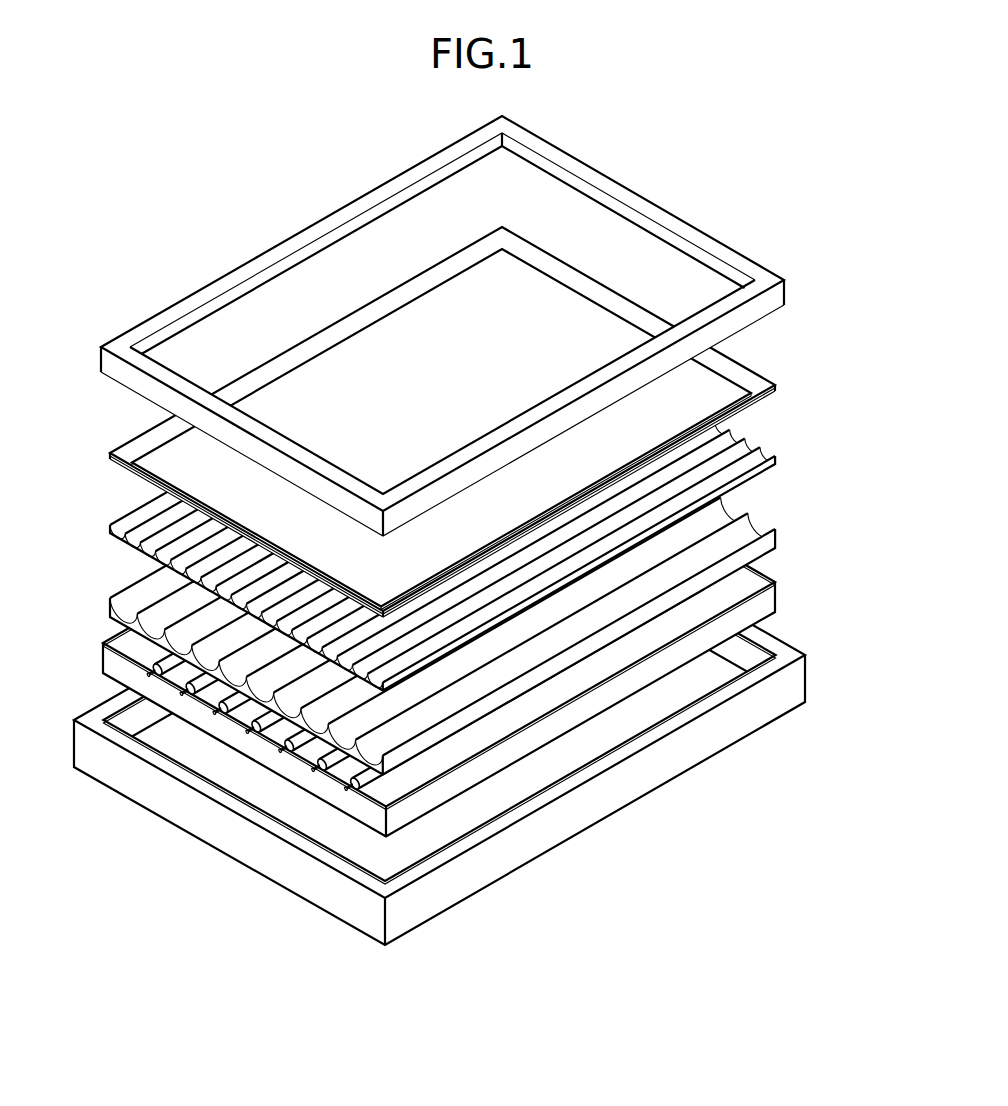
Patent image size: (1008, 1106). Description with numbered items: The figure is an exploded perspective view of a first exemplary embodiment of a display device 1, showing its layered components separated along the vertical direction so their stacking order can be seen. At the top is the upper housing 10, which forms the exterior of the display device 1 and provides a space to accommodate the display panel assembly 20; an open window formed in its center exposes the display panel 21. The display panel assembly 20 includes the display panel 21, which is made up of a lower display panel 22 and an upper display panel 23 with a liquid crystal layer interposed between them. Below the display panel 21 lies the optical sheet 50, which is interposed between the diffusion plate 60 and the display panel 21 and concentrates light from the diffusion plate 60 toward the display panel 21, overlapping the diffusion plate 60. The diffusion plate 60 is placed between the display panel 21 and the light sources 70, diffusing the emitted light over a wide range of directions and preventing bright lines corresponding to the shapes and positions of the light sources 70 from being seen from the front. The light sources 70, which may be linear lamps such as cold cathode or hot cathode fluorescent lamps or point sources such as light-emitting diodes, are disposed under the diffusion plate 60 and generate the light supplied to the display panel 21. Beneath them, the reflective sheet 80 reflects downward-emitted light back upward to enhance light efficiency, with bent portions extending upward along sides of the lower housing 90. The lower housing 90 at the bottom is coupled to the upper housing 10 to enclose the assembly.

The display device 1 is at (480, 542).
The upper housing 10 is at (774, 292).
The display panel assembly 20 is at (504, 422).
The display panel 21 is at (485, 422).
The lower display panel 22 is at (765, 389).
The upper display panel 23 is at (718, 378).
The optical sheet 50 is at (763, 453).
The diffusion plate 60 is at (797, 513).
The light sources 70 is at (147, 667).
The reflective sheet 80 is at (797, 580).
The lower housing 90 is at (790, 695).